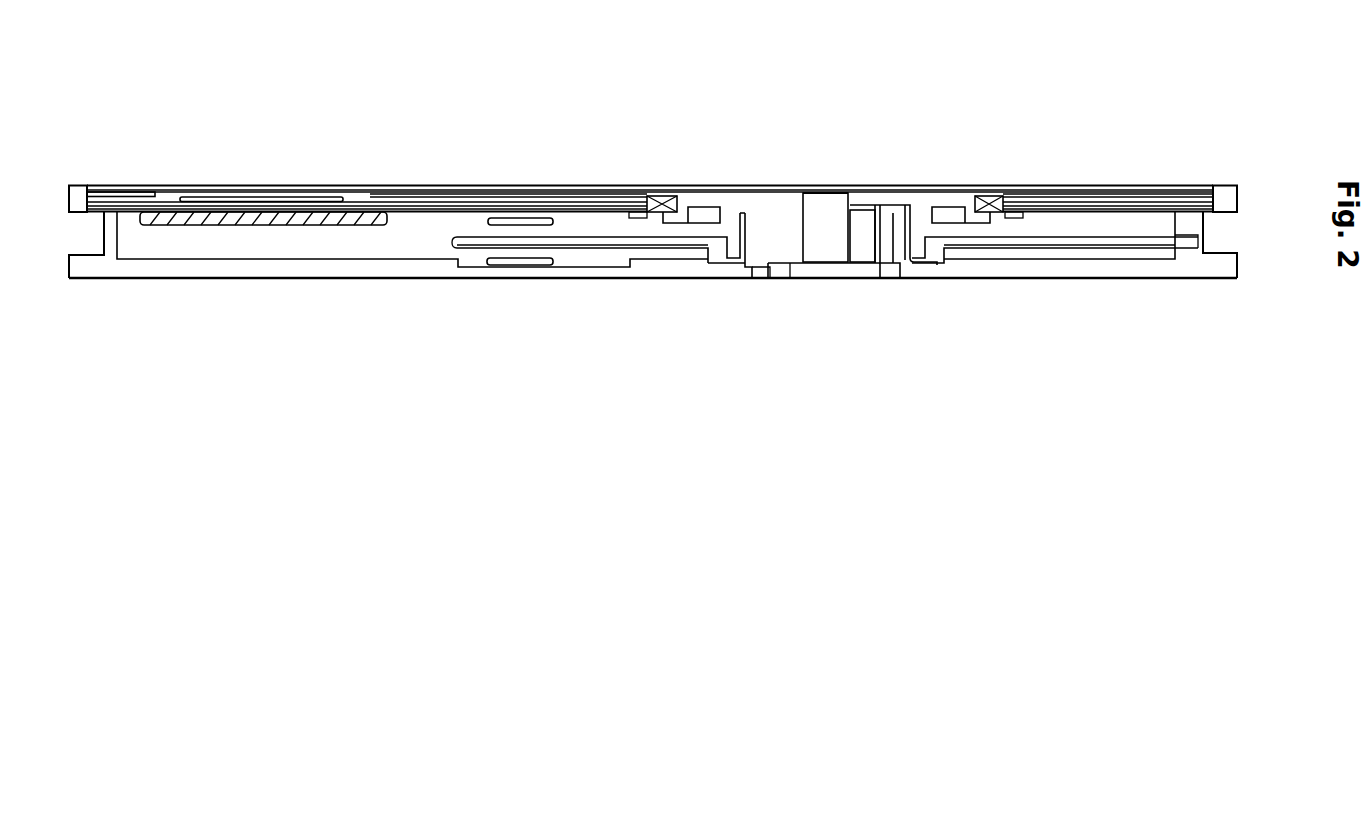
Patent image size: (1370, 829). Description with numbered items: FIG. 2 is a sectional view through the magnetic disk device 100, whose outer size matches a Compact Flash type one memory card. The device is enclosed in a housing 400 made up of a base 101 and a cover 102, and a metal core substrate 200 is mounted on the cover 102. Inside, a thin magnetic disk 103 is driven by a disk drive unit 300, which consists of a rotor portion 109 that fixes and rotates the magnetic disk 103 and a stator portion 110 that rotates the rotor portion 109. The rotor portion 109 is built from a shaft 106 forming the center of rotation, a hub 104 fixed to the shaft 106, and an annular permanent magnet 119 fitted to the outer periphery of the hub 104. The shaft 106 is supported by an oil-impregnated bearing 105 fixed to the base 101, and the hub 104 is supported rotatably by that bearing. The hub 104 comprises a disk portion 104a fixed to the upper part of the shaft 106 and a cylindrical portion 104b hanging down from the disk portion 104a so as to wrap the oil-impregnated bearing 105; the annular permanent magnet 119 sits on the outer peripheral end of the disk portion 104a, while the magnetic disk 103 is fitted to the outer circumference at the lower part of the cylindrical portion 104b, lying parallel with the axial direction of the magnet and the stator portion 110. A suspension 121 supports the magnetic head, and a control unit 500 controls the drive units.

The magnetic disk device 100 is at (455, 92).
The base 101 is at (1143, 272).
The cover 102 is at (172, 186).
The magnetic disk 103 is at (1030, 242).
The hub 104 is at (730, 210).
The disk portion 104a is at (703, 195).
The cylindrical portion 104b is at (728, 225).
The oil-impregnated bearing 105 is at (860, 248).
The shaft 106 is at (822, 248).
The rotor portion 109 is at (843, 195).
The stator portion 110 is at (1010, 195).
The annular permanent magnet 119 is at (662, 197).
The suspension 121 is at (503, 222).
The metal core substrate 200 is at (1147, 187).
The disk drive unit 300 is at (1077, 115).
The housing 400 is at (270, 282).
The control unit 500 is at (271, 196).